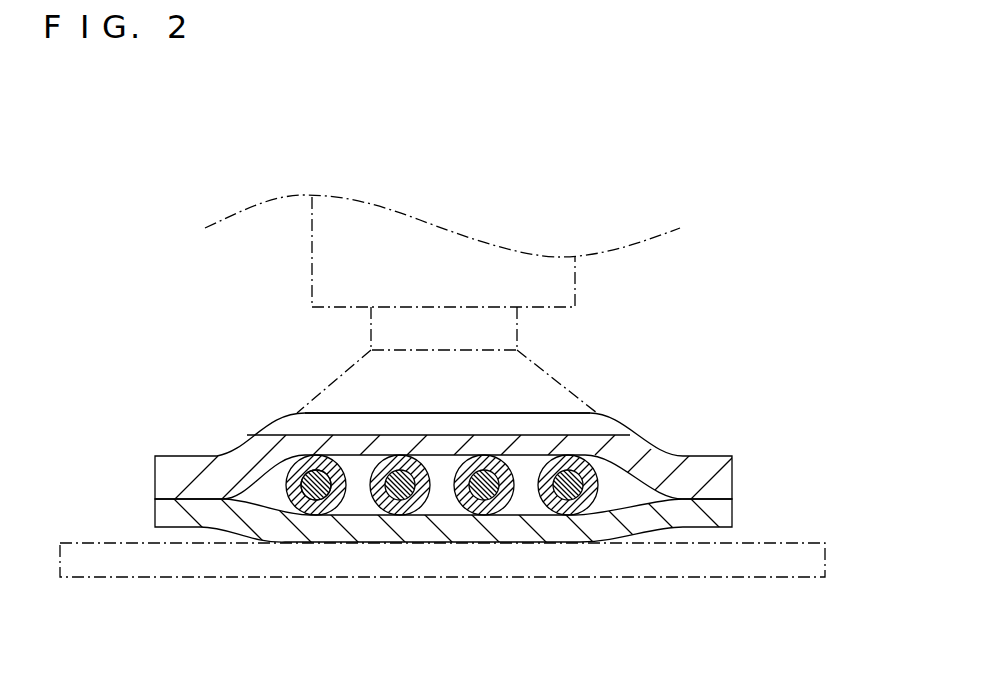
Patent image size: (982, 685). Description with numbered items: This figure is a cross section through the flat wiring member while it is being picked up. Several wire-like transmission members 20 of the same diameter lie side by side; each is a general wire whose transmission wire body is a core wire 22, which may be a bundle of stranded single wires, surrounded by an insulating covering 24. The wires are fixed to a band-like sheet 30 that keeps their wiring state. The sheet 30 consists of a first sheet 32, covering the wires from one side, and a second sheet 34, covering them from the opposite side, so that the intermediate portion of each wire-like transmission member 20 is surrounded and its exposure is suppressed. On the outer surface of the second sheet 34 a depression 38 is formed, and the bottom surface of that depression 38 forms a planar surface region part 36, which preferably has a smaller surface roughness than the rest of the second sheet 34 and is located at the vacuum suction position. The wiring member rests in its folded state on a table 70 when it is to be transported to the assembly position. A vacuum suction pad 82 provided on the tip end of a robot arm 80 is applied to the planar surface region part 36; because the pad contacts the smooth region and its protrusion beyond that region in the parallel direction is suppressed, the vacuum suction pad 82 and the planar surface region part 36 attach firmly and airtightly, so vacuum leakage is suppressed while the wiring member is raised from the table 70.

The wire-like transmission member 20 is at (442, 562).
The core wire 22 is at (316, 492).
The insulating covering 24 is at (340, 502).
The sheet 30 is at (421, 472).
The first sheet 32 is at (417, 520).
The second sheet 34 is at (155, 477).
The planar surface region part 36 is at (300, 435).
The depression 38 is at (558, 422).
The table 70 is at (631, 578).
The robot arm 80 is at (575, 283).
The vacuum suction pad 82 is at (537, 366).